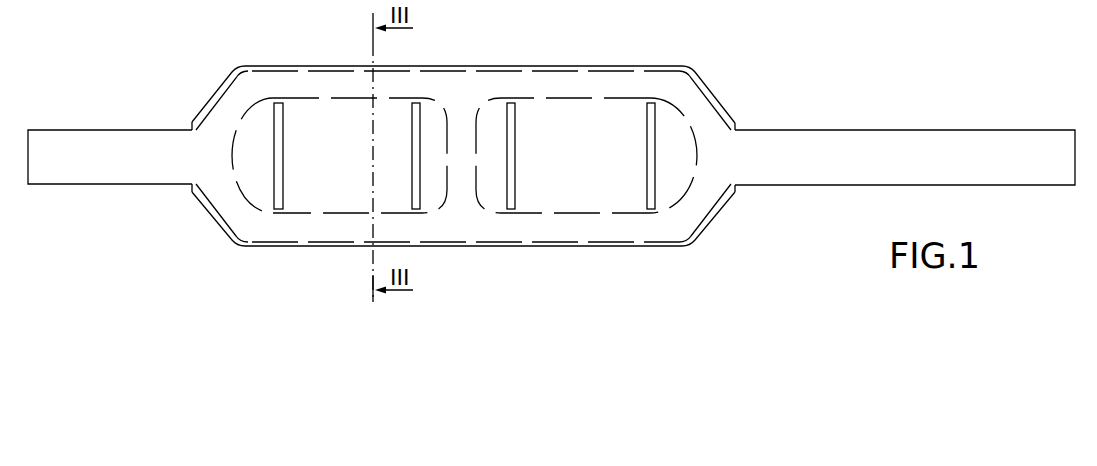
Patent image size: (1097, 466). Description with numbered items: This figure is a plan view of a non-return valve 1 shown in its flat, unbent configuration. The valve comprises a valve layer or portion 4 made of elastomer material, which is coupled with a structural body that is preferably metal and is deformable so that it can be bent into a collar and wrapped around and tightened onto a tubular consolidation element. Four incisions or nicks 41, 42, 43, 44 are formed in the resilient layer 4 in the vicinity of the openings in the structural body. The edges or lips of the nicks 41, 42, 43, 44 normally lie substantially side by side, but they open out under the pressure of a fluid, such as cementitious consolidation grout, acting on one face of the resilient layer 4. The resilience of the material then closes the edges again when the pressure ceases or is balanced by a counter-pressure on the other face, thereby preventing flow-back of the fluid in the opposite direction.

The non-return valve 1 is at (806, 102).
The valve layer 4 is at (597, 180).
The nick 41 is at (279, 132).
The nick 42 is at (415, 143).
The nick 43 is at (513, 145).
The nick 44 is at (650, 143).